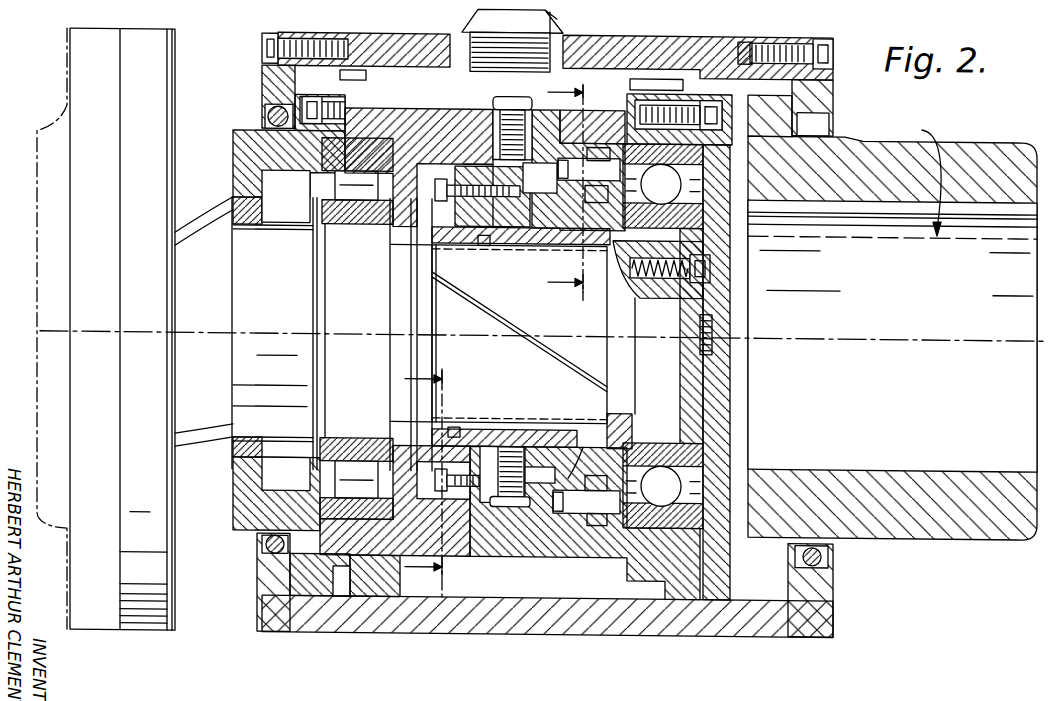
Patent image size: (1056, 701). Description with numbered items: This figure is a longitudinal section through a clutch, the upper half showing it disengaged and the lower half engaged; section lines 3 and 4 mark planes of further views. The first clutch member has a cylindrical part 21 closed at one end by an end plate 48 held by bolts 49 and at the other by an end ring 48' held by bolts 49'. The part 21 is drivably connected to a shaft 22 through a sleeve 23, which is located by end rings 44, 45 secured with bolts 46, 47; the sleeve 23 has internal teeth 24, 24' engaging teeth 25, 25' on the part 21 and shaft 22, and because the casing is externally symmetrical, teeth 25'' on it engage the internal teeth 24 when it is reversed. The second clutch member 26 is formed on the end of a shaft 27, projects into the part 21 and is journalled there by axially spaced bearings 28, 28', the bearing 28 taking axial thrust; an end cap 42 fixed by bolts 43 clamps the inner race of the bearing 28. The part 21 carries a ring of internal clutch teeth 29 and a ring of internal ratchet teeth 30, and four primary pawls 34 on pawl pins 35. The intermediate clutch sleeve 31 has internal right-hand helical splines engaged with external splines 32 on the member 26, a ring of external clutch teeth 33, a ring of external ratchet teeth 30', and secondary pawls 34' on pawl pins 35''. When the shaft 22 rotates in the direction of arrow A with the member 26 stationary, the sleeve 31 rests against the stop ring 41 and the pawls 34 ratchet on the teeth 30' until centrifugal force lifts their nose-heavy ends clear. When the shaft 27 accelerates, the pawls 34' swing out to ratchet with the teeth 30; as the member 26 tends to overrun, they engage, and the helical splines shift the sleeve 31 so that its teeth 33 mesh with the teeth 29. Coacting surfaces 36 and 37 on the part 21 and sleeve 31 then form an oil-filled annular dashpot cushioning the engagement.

The cylindrical part 21 is at (422, 125).
The shaft 22 is at (986, 160).
The sleeve 23 is at (611, 60).
The internal teeth 24 is at (364, 42).
The internal teeth 24' is at (746, 42).
The teeth 25 is at (354, 43).
The teeth 25' is at (746, 36).
The teeth 25'' is at (674, 83).
The second clutch member 26 is at (515, 335).
The shaft 27 is at (191, 232).
The bearing 28 is at (703, 337).
The bearing 28' is at (250, 333).
The internal clutch teeth 29 is at (525, 228).
The internal ratchet teeth 30 is at (482, 149).
The external ratchet teeth 30' is at (598, 277).
The clutch sleeve 31 is at (448, 222).
The external splines 32 is at (585, 427).
The external clutch teeth 33 is at (531, 230).
The primary pawls 34 is at (586, 367).
The secondary pawls 34' is at (483, 349).
The pawl pins 35 is at (549, 323).
The pawl pins 35'' is at (456, 334).
The coacting surface 36 is at (388, 195).
The coacting surface 37 is at (452, 170).
The ring 41 is at (613, 427).
The end cap 42 is at (714, 314).
The bolts 43 is at (712, 272).
The end ring 44 is at (270, 80).
The end ring 45 is at (818, 90).
The bolts 46 is at (265, 50).
The bolts 47 is at (830, 52).
The end plate 48 is at (706, 347).
The end ring 48' is at (270, 330).
The bolts 49 is at (753, 114).
The bolts 49' is at (284, 113).
The section line 3- 3 is at (565, 188).
The section line 4- 4 is at (434, 482).
The arrow A is at (921, 174).